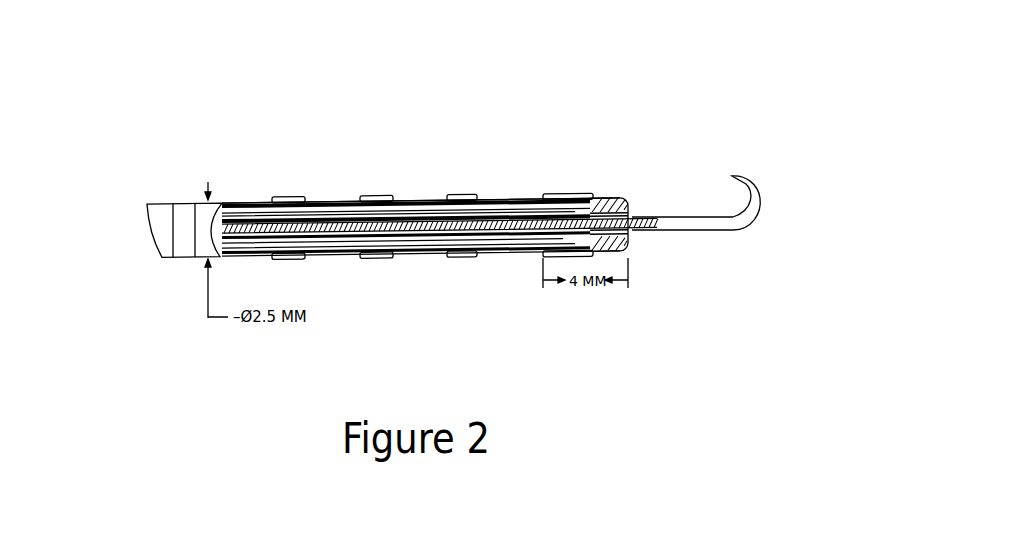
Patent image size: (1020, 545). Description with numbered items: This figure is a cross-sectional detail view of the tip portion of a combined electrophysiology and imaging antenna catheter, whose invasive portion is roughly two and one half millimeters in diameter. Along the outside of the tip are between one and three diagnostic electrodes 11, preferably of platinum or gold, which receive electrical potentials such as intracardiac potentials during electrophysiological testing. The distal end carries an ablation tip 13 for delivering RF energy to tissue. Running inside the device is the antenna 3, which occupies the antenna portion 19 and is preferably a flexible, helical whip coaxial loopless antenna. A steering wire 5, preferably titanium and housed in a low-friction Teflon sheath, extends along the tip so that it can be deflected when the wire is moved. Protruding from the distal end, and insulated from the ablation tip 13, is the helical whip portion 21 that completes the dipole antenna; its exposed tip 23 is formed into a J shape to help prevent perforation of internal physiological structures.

The antenna 3 is at (245, 217).
The steering wire 5 is at (520, 201).
The diagnostic electrodes 11 is at (290, 196).
The ablation tip 13 is at (600, 197).
The antenna portion 19 is at (501, 175).
The helical whip portion 21 is at (699, 236).
The tip 23 is at (759, 190).